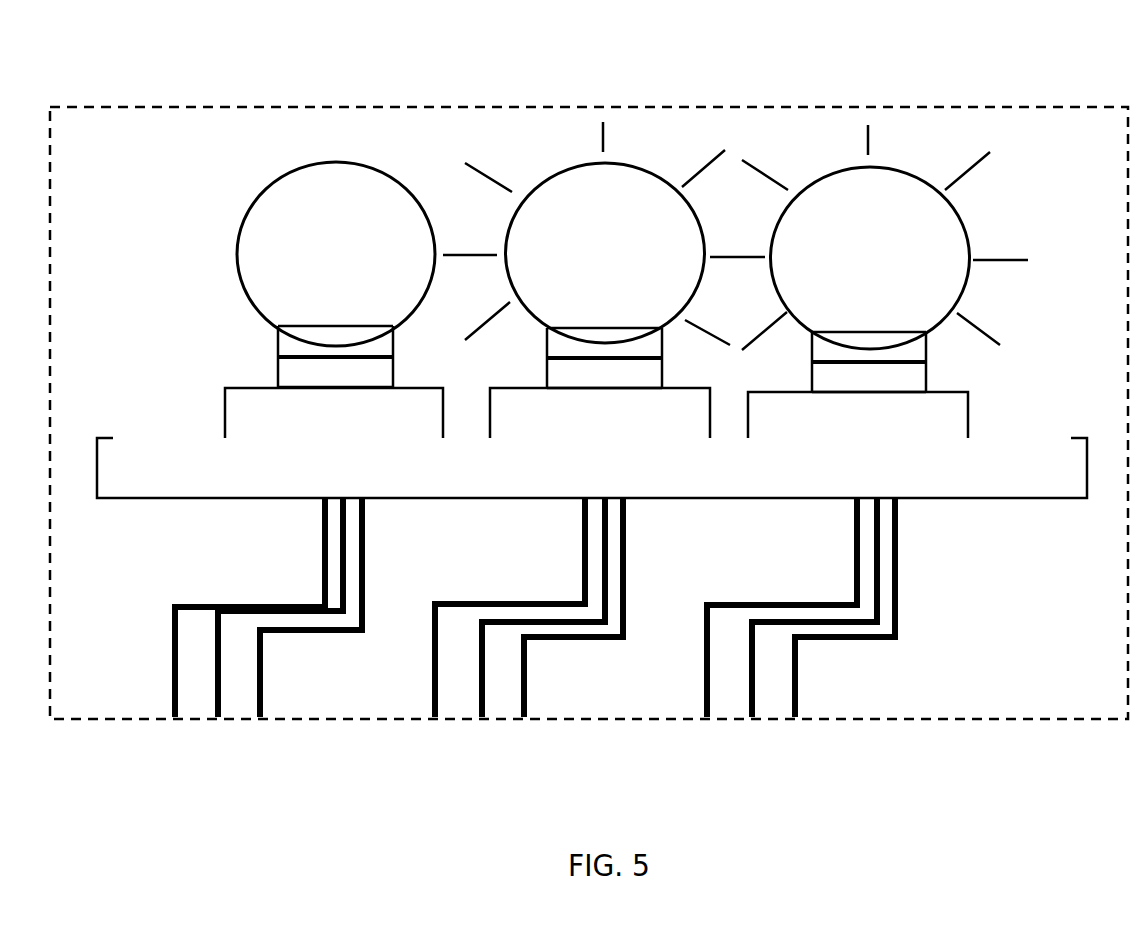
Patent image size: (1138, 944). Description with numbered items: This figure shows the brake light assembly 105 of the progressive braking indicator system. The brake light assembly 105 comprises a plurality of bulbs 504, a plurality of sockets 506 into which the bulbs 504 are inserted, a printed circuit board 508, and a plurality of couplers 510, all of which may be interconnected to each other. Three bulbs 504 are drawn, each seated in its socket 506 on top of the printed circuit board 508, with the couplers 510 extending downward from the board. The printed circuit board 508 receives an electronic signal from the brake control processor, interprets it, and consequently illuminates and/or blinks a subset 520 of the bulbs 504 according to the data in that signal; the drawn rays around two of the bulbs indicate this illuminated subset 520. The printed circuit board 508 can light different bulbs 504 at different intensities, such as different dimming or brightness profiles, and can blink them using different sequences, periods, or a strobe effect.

The brake light assembly 105 is at (135, 103).
The bulbs 504 is at (250, 205).
The sockets 506 is at (223, 402).
The printed circuit board 508 is at (990, 435).
The couplers 510 is at (898, 571).
The subset of the bulbs 520 is at (965, 227).